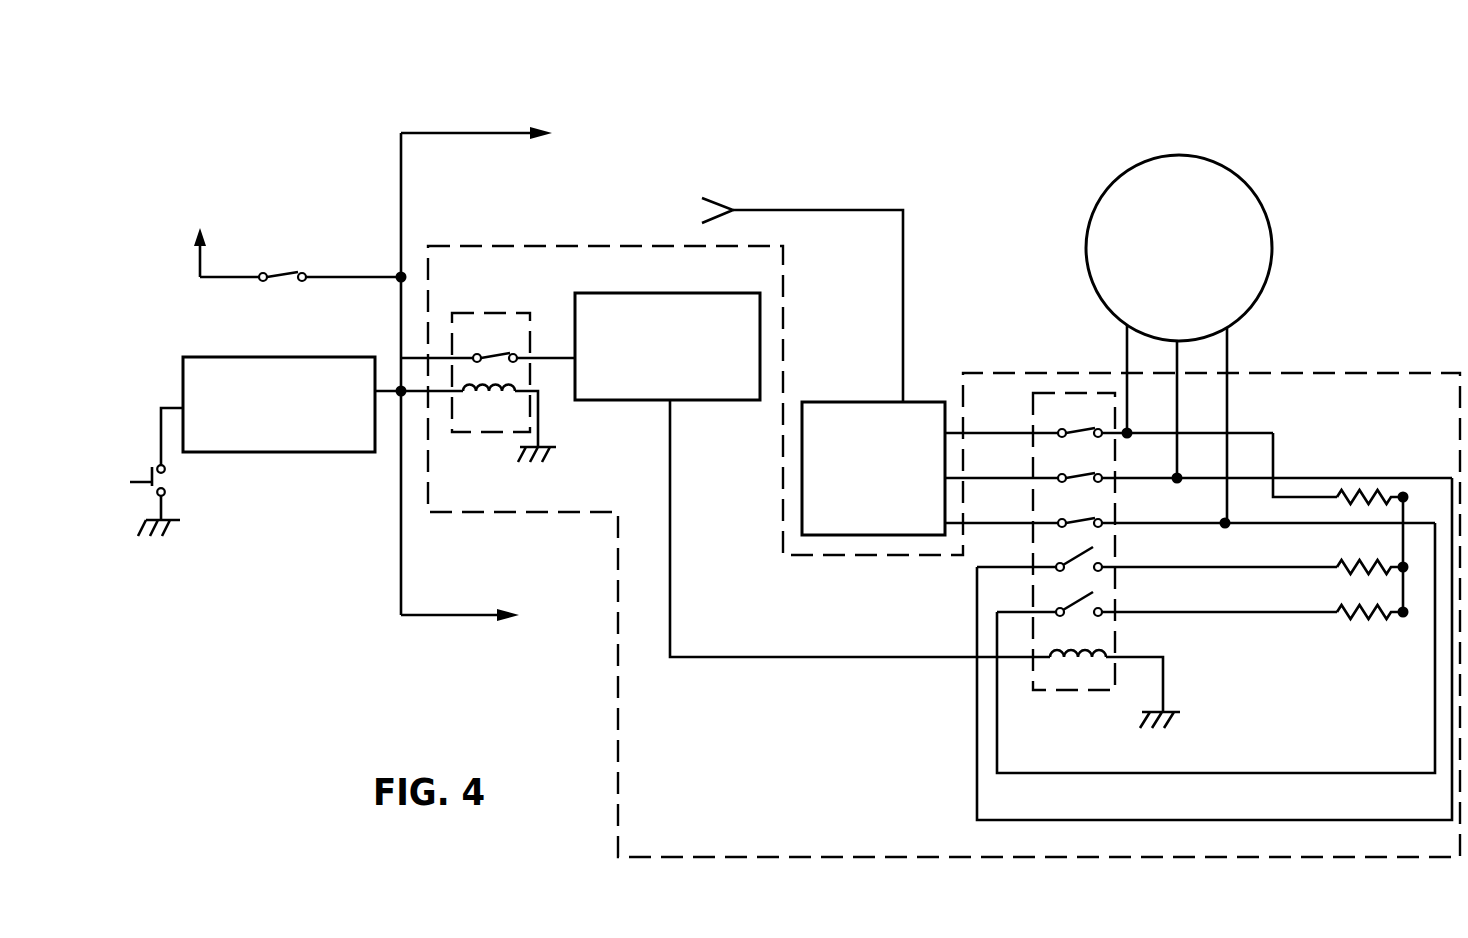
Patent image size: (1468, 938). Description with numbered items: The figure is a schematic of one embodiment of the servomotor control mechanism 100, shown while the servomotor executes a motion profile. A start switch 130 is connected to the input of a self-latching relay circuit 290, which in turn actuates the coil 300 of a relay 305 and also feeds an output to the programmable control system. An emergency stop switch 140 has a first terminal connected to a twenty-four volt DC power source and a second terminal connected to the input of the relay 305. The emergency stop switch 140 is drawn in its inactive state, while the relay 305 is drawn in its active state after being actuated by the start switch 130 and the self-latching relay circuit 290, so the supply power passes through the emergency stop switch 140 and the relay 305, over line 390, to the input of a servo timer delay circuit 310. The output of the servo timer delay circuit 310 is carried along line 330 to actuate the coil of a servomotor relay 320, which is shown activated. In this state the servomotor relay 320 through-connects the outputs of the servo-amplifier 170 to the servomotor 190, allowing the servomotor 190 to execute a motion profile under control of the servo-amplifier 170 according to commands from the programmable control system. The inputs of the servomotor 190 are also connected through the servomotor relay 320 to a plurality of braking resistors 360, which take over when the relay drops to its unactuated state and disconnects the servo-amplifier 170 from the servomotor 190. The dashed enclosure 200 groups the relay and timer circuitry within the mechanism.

The servomotor control mechanism 100 is at (359, 42).
The emergency stop switch 140 is at (314, 249).
The servo timer control circuit 200 is at (546, 233).
The relay 305 is at (513, 313).
The line 390 is at (552, 357).
The coil 300 is at (526, 381).
The self-latching relay circuit 290 is at (311, 452).
The start switch 130 is at (190, 494).
The servo timer delay circuit 310 is at (722, 393).
The servomotor relay 320 is at (1032, 410).
The servomotor 190 is at (1199, 319).
The servo-amplifier 170 is at (899, 518).
The line 330 is at (762, 657).
The braking resistors 360 is at (1348, 487).